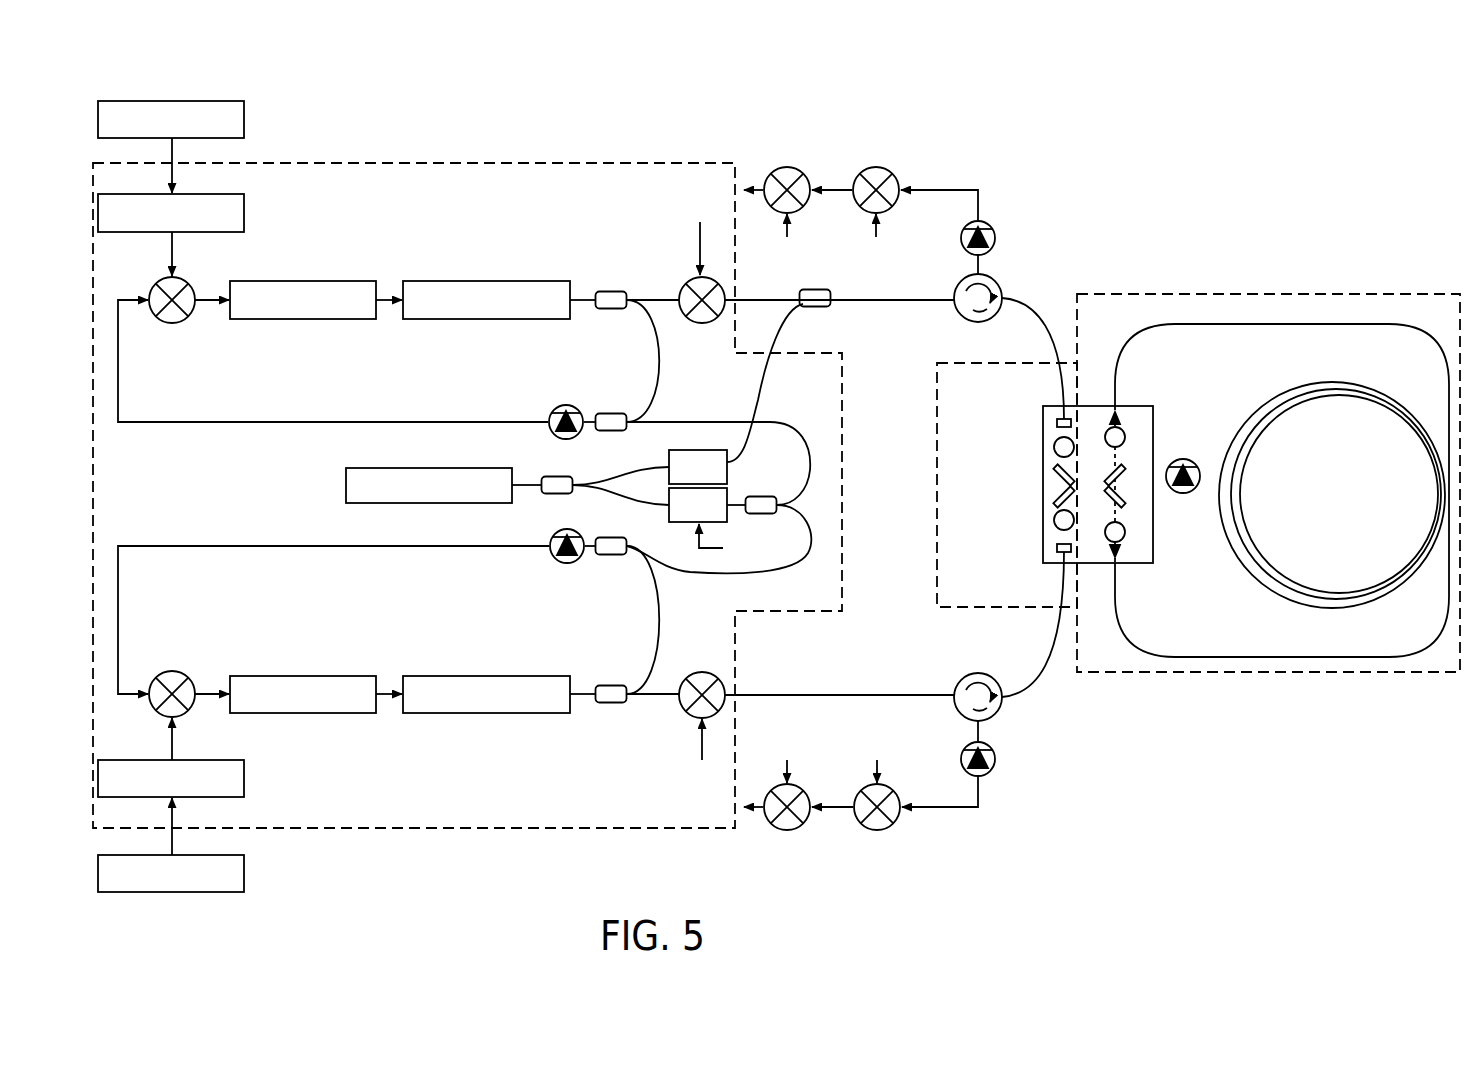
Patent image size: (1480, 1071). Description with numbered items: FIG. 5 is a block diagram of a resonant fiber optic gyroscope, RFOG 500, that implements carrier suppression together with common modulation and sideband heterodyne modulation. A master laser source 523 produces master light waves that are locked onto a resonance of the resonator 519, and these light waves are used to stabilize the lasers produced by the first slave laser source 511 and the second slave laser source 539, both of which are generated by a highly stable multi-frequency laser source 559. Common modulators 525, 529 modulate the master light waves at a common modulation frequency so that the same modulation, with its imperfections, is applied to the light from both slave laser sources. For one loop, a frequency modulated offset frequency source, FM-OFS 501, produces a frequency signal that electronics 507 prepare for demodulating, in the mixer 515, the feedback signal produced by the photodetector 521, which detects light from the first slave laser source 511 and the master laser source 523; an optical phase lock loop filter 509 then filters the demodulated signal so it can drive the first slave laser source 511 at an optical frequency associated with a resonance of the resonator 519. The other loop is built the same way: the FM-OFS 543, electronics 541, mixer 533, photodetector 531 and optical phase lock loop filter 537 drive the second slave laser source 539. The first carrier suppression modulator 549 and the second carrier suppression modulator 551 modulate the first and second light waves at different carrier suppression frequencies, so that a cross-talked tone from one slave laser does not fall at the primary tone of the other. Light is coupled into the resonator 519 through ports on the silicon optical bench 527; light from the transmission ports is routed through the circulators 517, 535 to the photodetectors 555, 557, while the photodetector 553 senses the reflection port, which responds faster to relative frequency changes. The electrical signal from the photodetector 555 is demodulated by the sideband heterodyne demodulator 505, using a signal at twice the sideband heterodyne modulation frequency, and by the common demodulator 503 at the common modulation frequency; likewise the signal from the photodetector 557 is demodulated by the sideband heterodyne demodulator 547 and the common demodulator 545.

The RFOG 500 is at (1296, 131).
The frequency modulated offset frequency source 501 is at (244, 120).
The common demodulator 503 is at (788, 166).
The sideband heterodyne demodulator 505 is at (877, 166).
The electronics 507 is at (244, 213).
The optical phase lock loop filter 509 is at (303, 319).
The first slave laser source 511 is at (481, 319).
The mixer 515 is at (177, 323).
The circulator 517 is at (960, 313).
The resonator 519 is at (1257, 293).
The photodetector 521 is at (568, 404).
The master laser source 523 is at (346, 485).
The common modulator 525 is at (727, 473).
The silicon optical bench 527 is at (1043, 491).
The common modulator 529 is at (669, 518).
The photodetector 531 is at (576, 563).
The mixer 533 is at (176, 671).
The circulator 535 is at (978, 673).
The optical phase lock loop filter 537 is at (304, 676).
The second slave laser source 539 is at (481, 676).
The electronics 541 is at (244, 778).
The frequency modulated offset frequency source 543 is at (244, 872).
The common demodulator 545 is at (788, 831).
The sideband heterodyne demodulator 547 is at (878, 831).
The first carrier suppression modulator 549 is at (704, 323).
The second carrier suppression modulator 551 is at (703, 672).
The photodetector 553 is at (1181, 459).
The photodetector 555 is at (995, 238).
The photodetector 557 is at (995, 760).
The multi-frequency laser source 559 is at (478, 162).